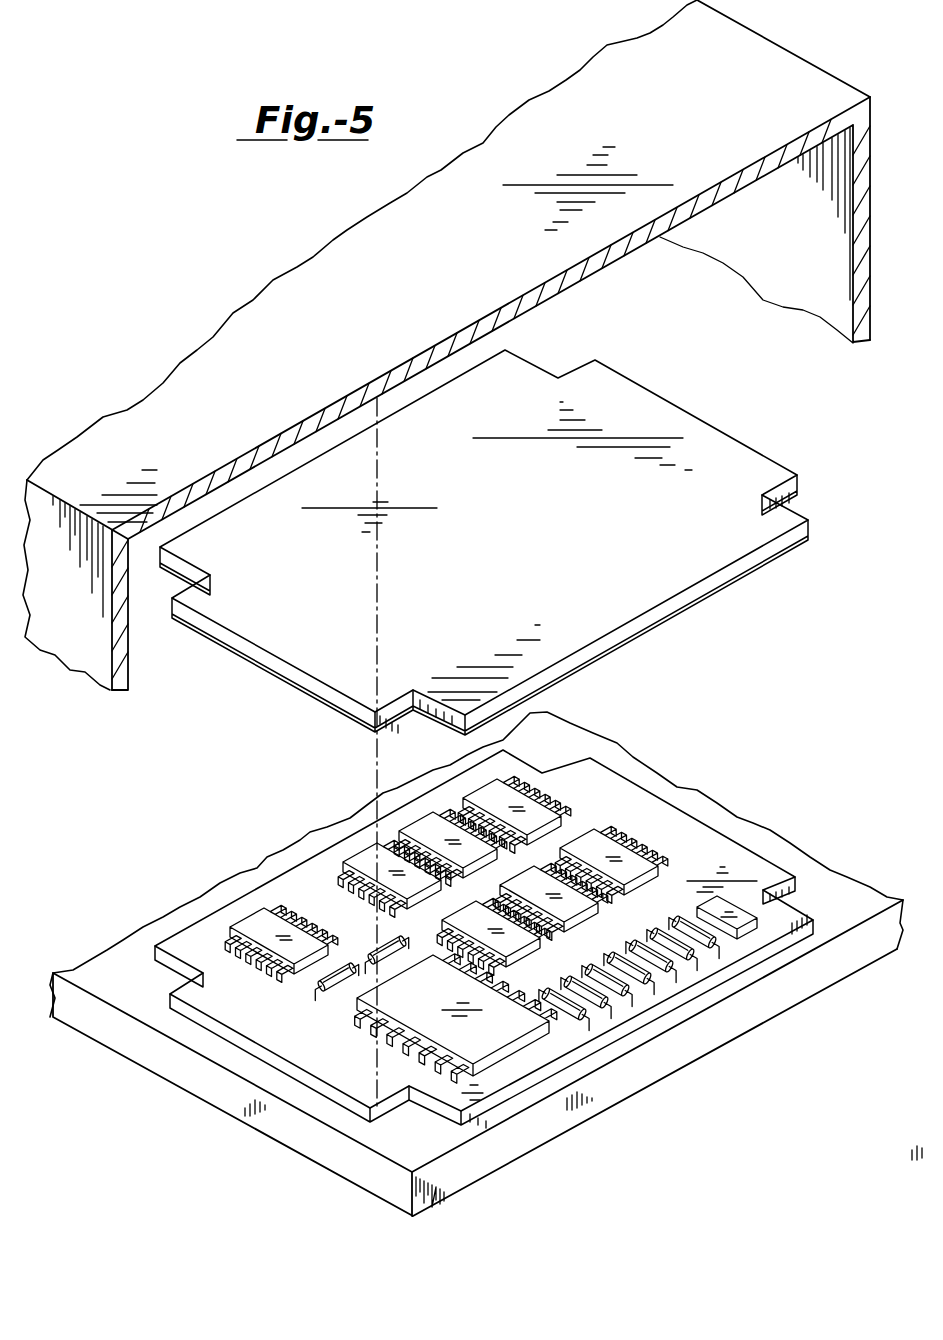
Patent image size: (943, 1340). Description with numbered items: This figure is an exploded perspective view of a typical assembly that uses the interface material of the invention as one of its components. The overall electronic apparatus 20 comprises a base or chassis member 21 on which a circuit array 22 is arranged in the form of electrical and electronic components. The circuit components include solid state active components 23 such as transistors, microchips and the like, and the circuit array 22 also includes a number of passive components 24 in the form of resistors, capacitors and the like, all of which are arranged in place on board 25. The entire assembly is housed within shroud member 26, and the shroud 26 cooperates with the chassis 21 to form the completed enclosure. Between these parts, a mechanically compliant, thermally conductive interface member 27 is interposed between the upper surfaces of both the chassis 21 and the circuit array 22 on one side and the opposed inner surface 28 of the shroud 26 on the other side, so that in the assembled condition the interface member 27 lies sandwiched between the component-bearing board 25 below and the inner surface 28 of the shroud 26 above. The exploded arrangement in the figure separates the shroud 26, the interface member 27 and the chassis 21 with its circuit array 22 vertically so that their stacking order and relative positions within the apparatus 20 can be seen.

The electronic apparatus 20 is at (529, 542).
The base or chassis member 21 is at (852, 955).
The circuit array 22 is at (486, 928).
The solid state active components 23 is at (248, 920).
The passive components 24 is at (320, 975).
The board 25 is at (750, 858).
The shroud member 26 is at (785, 55).
The mechanically compliant, thermally conductive interface member 27 is at (725, 455).
The inner surface of shroud 28 is at (623, 257).